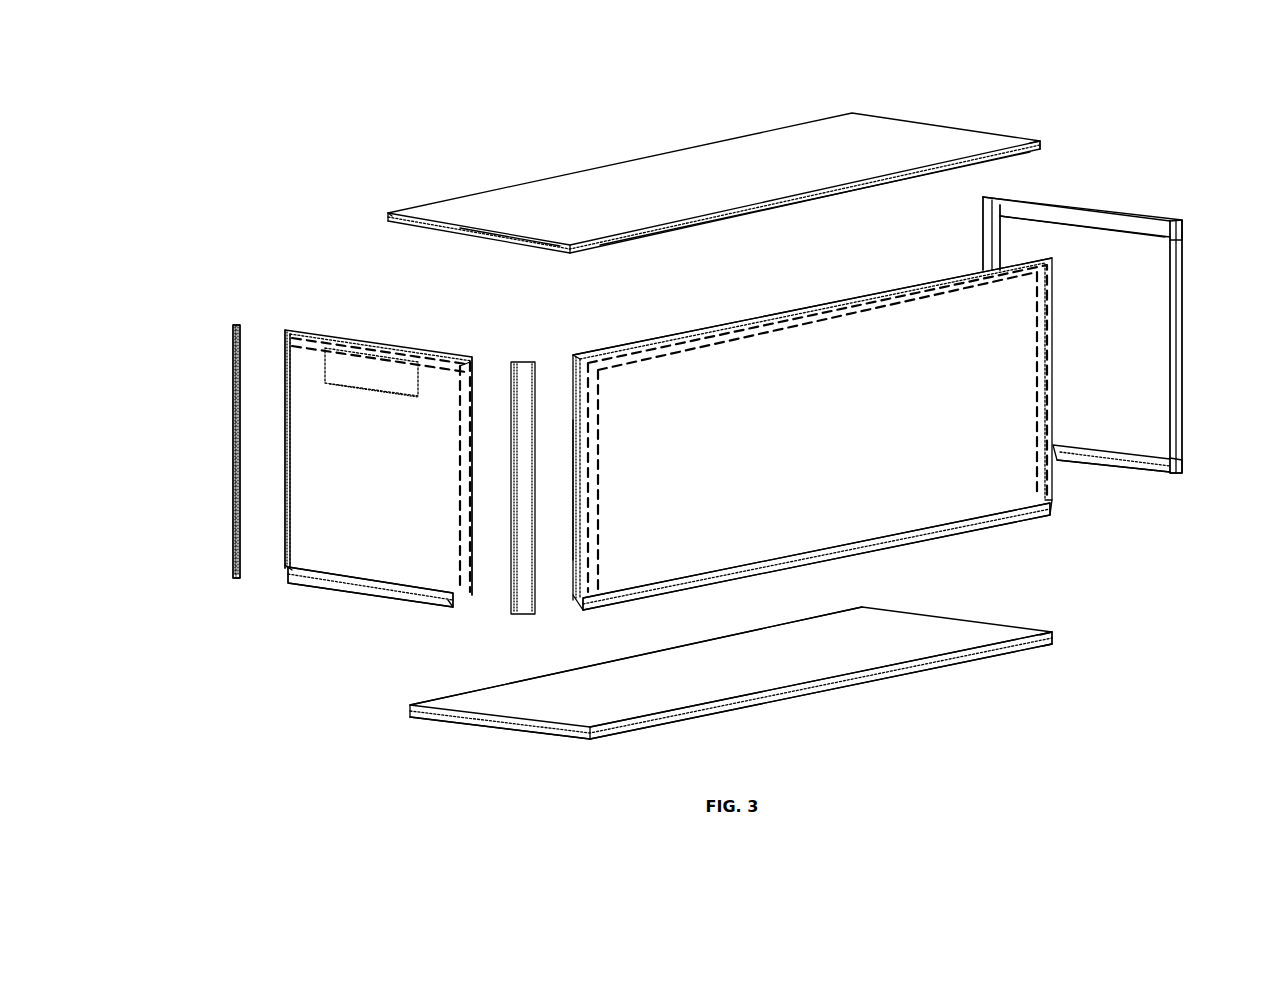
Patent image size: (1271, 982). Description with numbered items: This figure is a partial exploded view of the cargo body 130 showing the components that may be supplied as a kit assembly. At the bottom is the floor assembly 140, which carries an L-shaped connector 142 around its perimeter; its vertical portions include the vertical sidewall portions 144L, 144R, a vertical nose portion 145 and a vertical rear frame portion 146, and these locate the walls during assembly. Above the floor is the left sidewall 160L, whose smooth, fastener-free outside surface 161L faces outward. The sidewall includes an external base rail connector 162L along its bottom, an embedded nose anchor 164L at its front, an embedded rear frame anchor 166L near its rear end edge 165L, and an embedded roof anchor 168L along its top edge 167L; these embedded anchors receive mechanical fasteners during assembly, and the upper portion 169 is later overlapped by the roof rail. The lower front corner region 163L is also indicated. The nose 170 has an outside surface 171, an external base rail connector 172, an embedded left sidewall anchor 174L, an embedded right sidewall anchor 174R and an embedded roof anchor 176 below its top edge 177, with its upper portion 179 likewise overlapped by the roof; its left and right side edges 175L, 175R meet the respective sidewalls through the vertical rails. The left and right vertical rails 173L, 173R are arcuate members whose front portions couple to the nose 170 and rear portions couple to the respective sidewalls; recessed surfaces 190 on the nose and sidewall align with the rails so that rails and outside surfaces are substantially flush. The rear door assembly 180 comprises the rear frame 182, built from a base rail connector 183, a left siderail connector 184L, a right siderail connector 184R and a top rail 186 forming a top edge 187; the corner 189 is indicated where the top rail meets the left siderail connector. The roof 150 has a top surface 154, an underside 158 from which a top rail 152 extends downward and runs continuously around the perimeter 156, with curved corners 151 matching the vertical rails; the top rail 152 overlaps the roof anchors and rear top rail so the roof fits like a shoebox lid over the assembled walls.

The cargo body 130 is at (318, 168).
The floor assembly 140 is at (1048, 686).
The L-shaped connector 142 is at (765, 708).
The vertical sidewall portion 144L is at (855, 680).
The vertical sidewall portion 144R is at (430, 702).
The vertical nose portion 145 is at (495, 727).
The vertical rear frame portion 146 is at (1036, 634).
The roof 150 is at (655, 135).
The curved corner 151 is at (390, 212).
The top rail 152 is at (845, 194).
The top surface 154 is at (742, 155).
The perimeter 156 is at (1017, 132).
The underside 158 is at (510, 252).
The left sidewall 160L is at (1050, 537).
The outside surface 161L is at (852, 528).
The base rail connector 162L is at (705, 582).
The side panel bottom corner 163L is at (575, 606).
The embedded nose anchor 164L is at (590, 508).
The rear end edge 165L is at (1053, 506).
The embedded rear frame anchor 166L is at (1050, 480).
The top edge 167L is at (655, 340).
The embedded roof anchor 168L is at (738, 318).
The upper portion 169 is at (570, 354).
The nose 170 is at (318, 298).
The outside surface 171 is at (318, 566).
The base rail connector 172 is at (340, 606).
The left vertical rail 173L is at (521, 385).
The right vertical rail 173R is at (236, 322).
The embedded left sidewall anchor 174L is at (448, 605).
The embedded right sidewall anchor 174R is at (283, 572).
The door left edge 175L is at (467, 357).
The door right edge 175R is at (287, 334).
The embedded roof anchor 176 is at (370, 352).
The top edge 177 is at (335, 344).
The upper portion 179 is at (475, 378).
The rear door assembly 180 is at (1206, 166).
The rear frame 182 is at (1197, 451).
The base rail connector 183 is at (1150, 468).
The left siderail connector 184L is at (1184, 290).
The right siderail connector 184R is at (982, 246).
The top rail 186 is at (1098, 220).
The top edge 187 is at (1140, 215).
The frame top right corner 189 is at (1190, 235).
The recessed surface 190 is at (228, 470).